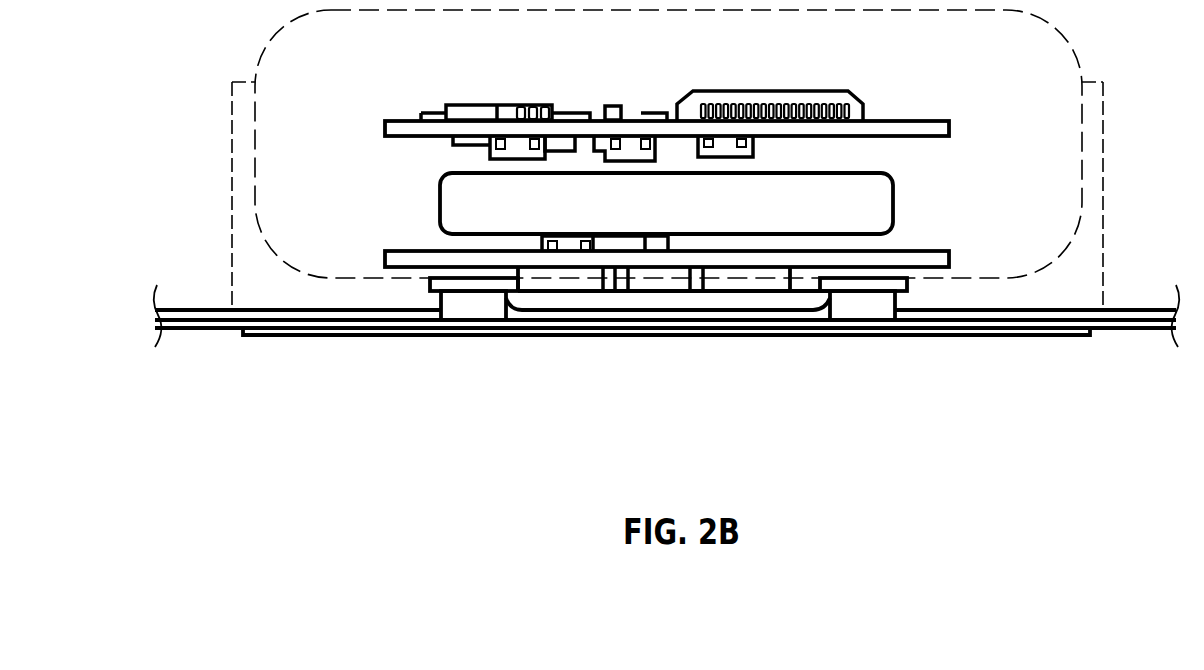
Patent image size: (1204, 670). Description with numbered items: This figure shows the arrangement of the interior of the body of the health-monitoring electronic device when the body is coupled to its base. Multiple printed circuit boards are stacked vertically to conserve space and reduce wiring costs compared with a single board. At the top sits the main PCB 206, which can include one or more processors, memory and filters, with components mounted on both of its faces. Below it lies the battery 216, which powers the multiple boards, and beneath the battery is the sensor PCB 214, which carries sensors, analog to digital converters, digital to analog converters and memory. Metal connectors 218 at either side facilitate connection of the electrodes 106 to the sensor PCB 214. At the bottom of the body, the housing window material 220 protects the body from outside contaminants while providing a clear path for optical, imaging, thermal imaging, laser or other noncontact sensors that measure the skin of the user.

The electrodes 106 is at (1122, 330).
The main printed circuit board 206 is at (958, 128).
The sensor PCB 214 is at (958, 257).
The battery 216 is at (425, 192).
The metal connectors 218 is at (426, 292).
The housing window material 220 is at (543, 313).